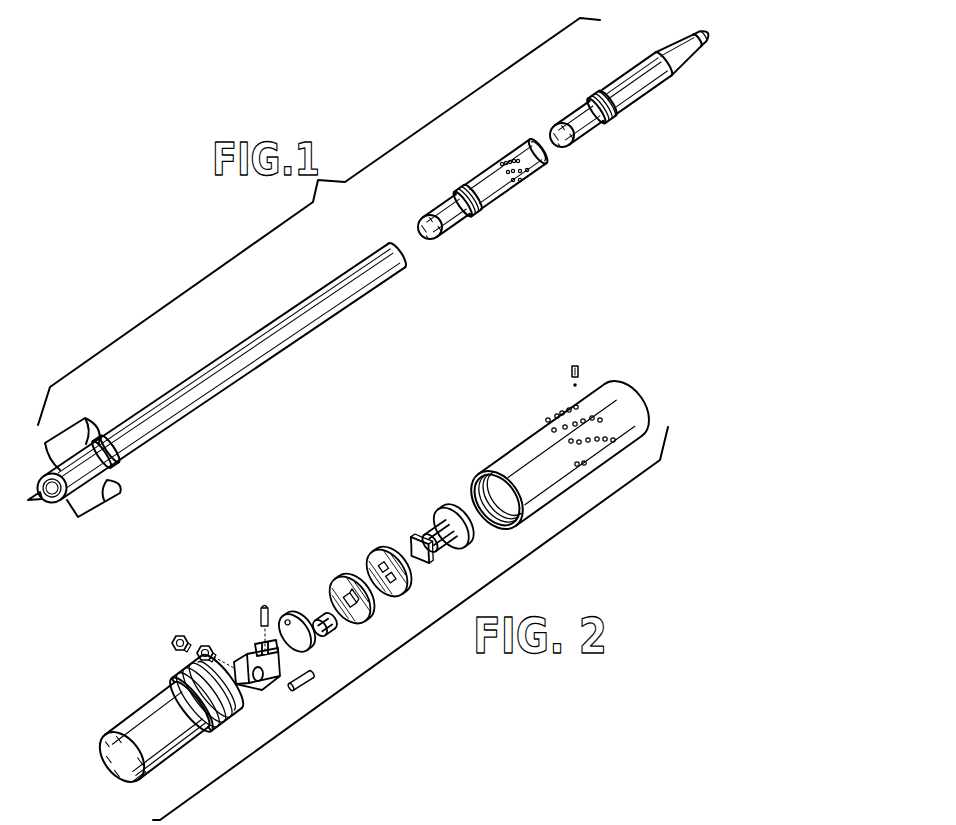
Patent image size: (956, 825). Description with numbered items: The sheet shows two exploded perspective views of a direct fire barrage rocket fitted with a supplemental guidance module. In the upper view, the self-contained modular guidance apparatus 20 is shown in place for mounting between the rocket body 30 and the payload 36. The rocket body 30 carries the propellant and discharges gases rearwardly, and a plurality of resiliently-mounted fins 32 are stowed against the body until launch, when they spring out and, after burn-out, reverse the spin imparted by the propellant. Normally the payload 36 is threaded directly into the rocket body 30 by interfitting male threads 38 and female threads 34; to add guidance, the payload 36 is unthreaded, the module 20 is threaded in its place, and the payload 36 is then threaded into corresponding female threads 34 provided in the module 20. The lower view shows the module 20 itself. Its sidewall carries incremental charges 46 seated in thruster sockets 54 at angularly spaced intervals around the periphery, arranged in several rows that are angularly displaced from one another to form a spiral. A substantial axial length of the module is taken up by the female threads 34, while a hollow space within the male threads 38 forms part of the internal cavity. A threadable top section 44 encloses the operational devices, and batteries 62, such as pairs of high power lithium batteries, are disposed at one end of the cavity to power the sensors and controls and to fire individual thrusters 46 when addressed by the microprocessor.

In FIG. 2, the self-contained modular guidance apparatus 20 is at (378, 526).
In FIG. 1, the rocket body 30 is at (297, 293).
In FIG. 1, the fins 32 is at (82, 424).
In FIG. 1, the female threads 34 is at (546, 147).
In FIG. 2, the female threads 34 is at (603, 418).
In FIG. 1, the payload 36 is at (591, 84).
In FIG. 1, the male threads 38 is at (453, 192).
In FIG. 2, the male threads 38 is at (153, 694).
In FIG. 2, the top section 44 is at (152, 780).
In FIG. 1, the incremental charges 46 is at (534, 176).
In FIG. 2, the incremental charges 46 is at (584, 373).
In FIG. 2, the thruster sockets 54 is at (581, 445).
In FIG. 2, the batteries 62 is at (204, 644).